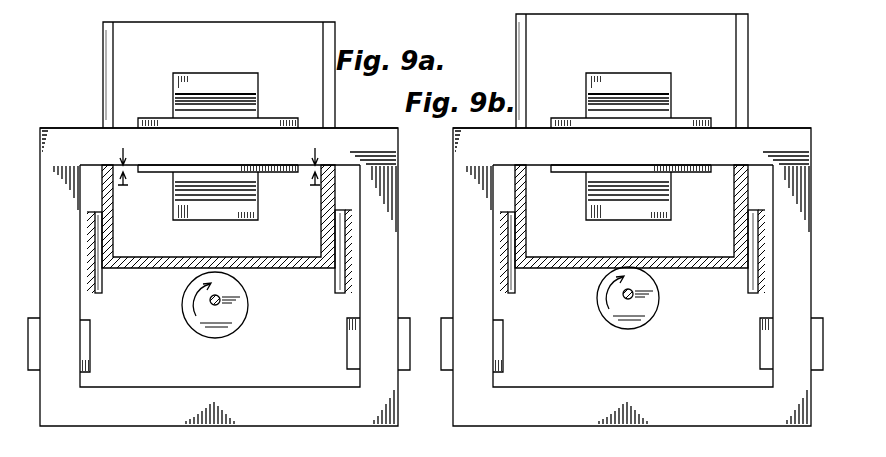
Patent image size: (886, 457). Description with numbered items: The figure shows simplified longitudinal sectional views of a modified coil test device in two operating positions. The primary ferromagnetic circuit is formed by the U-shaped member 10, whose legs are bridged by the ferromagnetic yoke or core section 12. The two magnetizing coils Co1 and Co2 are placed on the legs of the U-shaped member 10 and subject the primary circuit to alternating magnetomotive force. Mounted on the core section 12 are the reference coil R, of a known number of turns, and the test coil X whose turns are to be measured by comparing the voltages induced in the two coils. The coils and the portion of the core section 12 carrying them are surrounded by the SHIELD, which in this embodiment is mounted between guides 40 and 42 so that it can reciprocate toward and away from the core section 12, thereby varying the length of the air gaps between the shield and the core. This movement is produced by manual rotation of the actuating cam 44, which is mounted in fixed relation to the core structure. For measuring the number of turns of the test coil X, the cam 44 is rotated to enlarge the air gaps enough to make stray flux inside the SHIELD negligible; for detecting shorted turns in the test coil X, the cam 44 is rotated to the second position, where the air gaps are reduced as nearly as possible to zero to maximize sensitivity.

In FIG. 9A, the U-shaped member 10 is at (392, 228).
In FIG. 9B, the U-shaped member 10 is at (620, 277).
In FIG. 9A, the core section 12 is at (353, 125).
In FIG. 9B, the core section 12 is at (632, 133).
In FIG. 9A, the guide 40 is at (103, 283).
In FIG. 9A, the guide 42 is at (335, 289).
In FIG. 9A, the actuating cam 44 is at (236, 330).
In FIG. 9A, the test coil X is at (243, 73).
In FIG. 9B, the test coil X is at (631, 133).
In FIG. 9A, the reference coil R is at (270, 118).
In FIG. 9B, the reference coil R is at (634, 123).
In FIG. 9A, the magnetizing coil Co1 is at (91, 357).
In FIG. 9B, the magnetizing coil Co1 is at (523, 346).
In FIG. 9A, the magnetizing coil Co2 is at (347, 358).
In FIG. 9B, the magnetizing coil Co2 is at (735, 345).
In FIG. 9A, the shield SHIELD is at (321, 232).
In FIG. 9B, the shield SHIELD is at (631, 216).